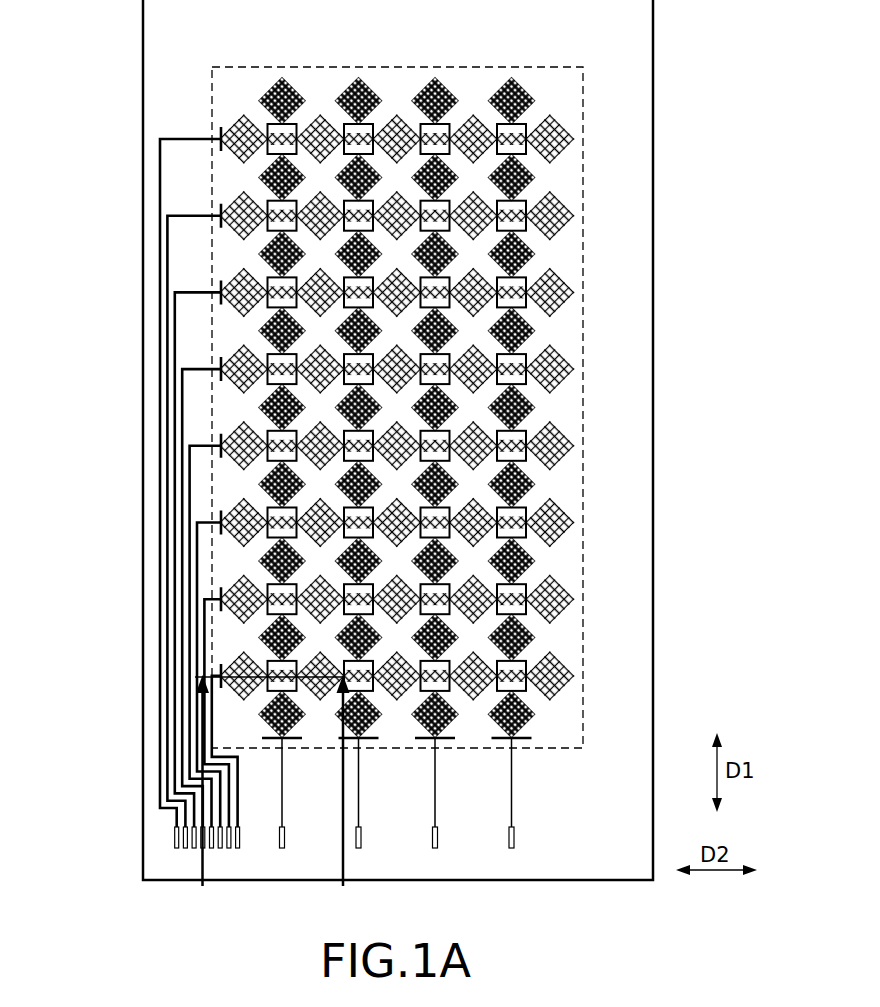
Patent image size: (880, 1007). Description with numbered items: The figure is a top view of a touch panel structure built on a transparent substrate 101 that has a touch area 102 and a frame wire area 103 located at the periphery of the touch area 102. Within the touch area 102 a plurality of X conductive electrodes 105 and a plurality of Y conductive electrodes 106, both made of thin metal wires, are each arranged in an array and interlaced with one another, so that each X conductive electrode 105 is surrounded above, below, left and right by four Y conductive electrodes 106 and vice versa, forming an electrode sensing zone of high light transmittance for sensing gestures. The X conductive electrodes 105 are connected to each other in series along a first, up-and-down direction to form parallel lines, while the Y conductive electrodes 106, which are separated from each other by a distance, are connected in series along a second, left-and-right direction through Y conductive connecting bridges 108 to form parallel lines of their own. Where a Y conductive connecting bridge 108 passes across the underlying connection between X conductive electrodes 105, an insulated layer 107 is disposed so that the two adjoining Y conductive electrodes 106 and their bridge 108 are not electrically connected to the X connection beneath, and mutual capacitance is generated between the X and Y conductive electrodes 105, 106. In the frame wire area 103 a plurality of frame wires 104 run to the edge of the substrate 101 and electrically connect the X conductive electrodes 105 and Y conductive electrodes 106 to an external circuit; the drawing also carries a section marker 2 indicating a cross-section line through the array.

The transparent substrate 101 is at (614, 871).
The touch area 102 is at (572, 176).
The frame wire area 103 is at (636, 206).
The frame wires 104 is at (160, 139).
The X conductive electrodes 105 is at (258, 98).
The Y conductive electrodes 106 is at (327, 127).
The insulated layers 107 is at (268, 132).
The Y conductive connecting bridges 108 is at (287, 133).
The section line 2 is at (274, 798).